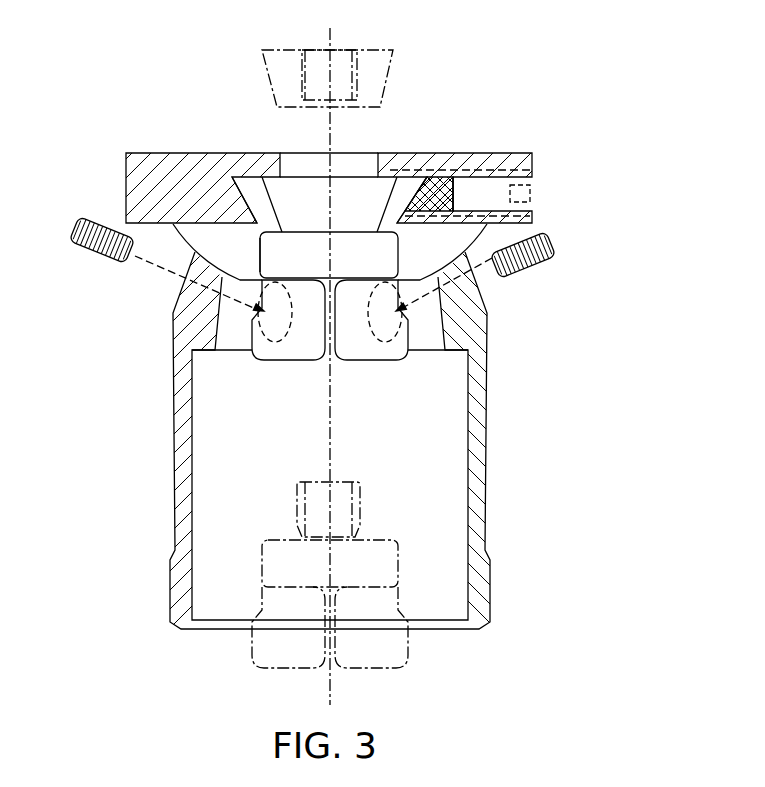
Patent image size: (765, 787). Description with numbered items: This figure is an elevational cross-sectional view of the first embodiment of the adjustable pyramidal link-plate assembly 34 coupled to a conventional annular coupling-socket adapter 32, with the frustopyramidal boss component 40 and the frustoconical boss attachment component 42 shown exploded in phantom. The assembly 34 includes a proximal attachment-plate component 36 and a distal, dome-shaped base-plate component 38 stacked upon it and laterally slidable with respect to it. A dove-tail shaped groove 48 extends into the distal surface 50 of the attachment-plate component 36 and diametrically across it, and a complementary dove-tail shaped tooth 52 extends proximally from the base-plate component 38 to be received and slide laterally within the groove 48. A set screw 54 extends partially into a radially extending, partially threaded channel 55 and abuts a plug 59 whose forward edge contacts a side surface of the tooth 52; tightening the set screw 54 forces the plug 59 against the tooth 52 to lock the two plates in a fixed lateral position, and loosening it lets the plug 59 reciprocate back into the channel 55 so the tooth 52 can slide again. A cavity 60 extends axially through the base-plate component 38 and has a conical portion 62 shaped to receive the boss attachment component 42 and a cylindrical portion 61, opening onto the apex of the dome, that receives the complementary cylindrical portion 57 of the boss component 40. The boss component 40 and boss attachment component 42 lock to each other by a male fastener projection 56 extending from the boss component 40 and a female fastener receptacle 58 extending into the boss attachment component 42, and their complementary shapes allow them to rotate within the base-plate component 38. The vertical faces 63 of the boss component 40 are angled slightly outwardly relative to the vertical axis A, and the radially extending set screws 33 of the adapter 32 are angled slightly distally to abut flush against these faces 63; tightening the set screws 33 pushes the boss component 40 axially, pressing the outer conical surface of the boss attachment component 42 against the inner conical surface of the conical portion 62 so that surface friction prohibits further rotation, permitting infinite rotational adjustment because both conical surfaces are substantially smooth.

The annular coupling-socket adapter 32 is at (478, 328).
The set screws 33 is at (86, 253).
The adjustable pyramidal link-plate assembly 34 is at (374, 162).
The attachment-plate component 36 is at (128, 203).
The dome-shaped base-plate component 38 is at (463, 240).
The frustopyramidal boss component 40 is at (273, 362).
The frustoconical boss attachment component 42 is at (264, 60).
The dove-tail shaped groove 48 is at (247, 170).
The distal surface 50 is at (147, 224).
The dove-tail shaped tooth 52 is at (410, 184).
The set screw 54 is at (533, 203).
The partially threaded channel 55 is at (517, 166).
The male fastener projection 56 is at (297, 512).
The cylindrical portion 57 is at (299, 246).
The female fastener receptacle 58 is at (353, 78).
The plug 59 is at (443, 187).
The cavity 60 is at (397, 250).
The cylindrical portion 61 is at (261, 262).
The conical portion 62 is at (270, 188).
The vertical faces 63 is at (298, 362).
The vertical axis A is at (333, 437).